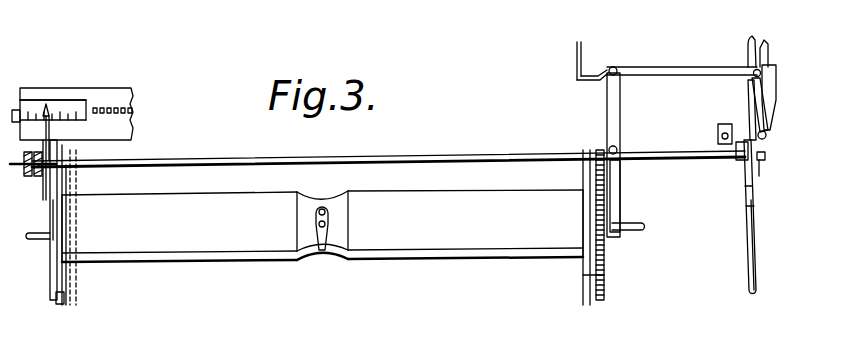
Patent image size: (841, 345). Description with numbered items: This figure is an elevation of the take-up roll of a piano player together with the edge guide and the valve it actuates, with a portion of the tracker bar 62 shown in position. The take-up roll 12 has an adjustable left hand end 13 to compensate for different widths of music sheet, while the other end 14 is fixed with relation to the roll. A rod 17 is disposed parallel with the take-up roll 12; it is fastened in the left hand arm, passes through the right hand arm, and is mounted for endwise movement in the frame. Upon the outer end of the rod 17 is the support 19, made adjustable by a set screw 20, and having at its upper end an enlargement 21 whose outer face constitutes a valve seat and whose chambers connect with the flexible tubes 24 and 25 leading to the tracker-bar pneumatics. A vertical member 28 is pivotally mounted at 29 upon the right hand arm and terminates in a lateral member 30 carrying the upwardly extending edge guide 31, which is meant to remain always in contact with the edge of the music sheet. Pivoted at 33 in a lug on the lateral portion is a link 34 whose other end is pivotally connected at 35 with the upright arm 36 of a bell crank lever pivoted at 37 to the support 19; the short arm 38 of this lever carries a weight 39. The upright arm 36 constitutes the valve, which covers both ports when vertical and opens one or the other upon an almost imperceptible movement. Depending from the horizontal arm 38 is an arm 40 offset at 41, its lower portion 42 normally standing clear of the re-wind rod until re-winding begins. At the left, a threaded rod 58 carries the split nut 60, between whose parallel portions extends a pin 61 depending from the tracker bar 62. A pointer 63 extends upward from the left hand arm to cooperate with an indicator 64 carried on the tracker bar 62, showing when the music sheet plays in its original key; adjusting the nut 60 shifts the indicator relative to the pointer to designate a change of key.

The take-up roll 12 is at (395, 254).
The left hand end 13 is at (58, 294).
The right hand end 14 is at (587, 272).
The rod 17 is at (459, 156).
The support 19 is at (750, 172).
The set screw 20 is at (758, 176).
The enlargement 21 is at (755, 98).
The flexible tube 24 is at (767, 44).
The flexible tube 25 is at (750, 42).
The vertical member 28 is at (616, 102).
The pivot 29 is at (606, 146).
The lateral member 30 is at (585, 79).
The edge guide 31 is at (577, 59).
The pivot 33 is at (616, 68).
The link 34 is at (676, 72).
The pivotal connection 35 is at (754, 78).
The upright arm 36 is at (762, 117).
The pivot 37 is at (763, 162).
The short arm 38 is at (738, 142).
The weight 39 is at (718, 136).
The arm 40 is at (752, 188).
The offset 41 is at (787, 232).
The lower portion 42 is at (757, 266).
The rod 58 is at (29, 158).
The split nut 60 is at (27, 176).
The pin 61 is at (60, 168).
The tracker bar 62 is at (72, 114).
The pointer 63 is at (52, 150).
The indicator 64 is at (28, 104).